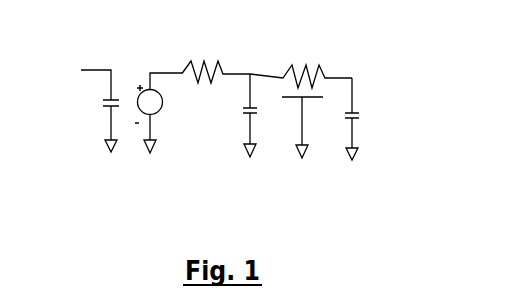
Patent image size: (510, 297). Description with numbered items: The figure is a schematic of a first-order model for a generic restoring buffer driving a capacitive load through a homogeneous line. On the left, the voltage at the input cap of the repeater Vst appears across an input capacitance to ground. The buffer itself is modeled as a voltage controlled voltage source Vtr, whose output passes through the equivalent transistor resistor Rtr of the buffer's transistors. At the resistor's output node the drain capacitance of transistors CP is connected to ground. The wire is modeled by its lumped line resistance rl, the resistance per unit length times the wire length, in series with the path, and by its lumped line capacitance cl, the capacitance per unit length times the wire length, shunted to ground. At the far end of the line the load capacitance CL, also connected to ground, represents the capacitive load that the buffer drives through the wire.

The voltage at input cap of the repeater Vst is at (85, 111).
The voltage controlled voltage source Vtr is at (159, 113).
The equivalent transistor resistor Rtr is at (216, 55).
The drain capacitance of transistors CP is at (238, 115).
The line resistance rl is at (301, 61).
The line capacitance cl is at (302, 127).
The load capacitance CL is at (360, 119).